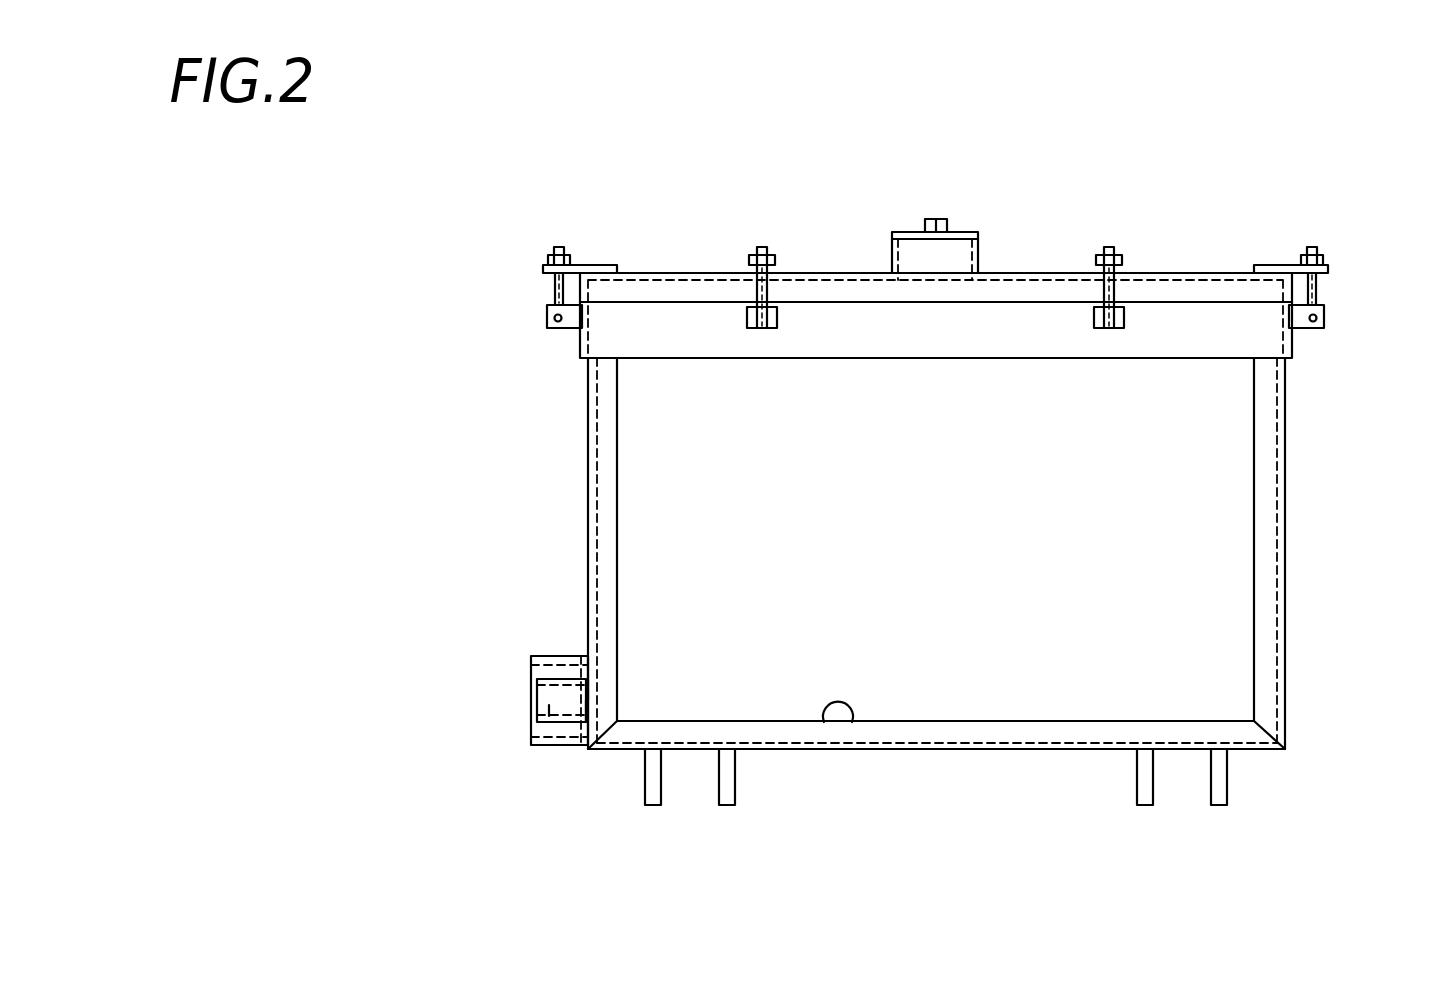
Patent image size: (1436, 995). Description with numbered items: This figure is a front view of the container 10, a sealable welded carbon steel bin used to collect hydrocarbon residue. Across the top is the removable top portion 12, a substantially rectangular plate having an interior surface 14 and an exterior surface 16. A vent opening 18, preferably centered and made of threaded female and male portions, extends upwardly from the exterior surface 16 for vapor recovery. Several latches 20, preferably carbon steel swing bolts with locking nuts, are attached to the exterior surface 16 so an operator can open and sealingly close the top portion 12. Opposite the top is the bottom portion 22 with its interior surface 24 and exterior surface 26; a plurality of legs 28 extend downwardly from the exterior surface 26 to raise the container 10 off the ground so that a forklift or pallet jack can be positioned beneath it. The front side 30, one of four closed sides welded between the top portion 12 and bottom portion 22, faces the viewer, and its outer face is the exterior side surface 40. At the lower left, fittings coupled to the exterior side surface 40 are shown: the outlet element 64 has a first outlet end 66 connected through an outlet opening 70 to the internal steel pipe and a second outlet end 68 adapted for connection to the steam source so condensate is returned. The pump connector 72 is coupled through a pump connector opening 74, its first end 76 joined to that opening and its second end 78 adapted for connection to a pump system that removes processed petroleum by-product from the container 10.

The container 10 is at (445, 318).
The removable top portion 12 is at (818, 273).
The interior surface 14 is at (1250, 302).
The exterior surface 16 is at (1032, 273).
The vent opening 18 is at (911, 258).
The latches 20 is at (754, 268).
The bottom portion 22 is at (941, 743).
The interior surface 24 is at (826, 716).
The exterior surface 26 is at (1013, 751).
The legs 28 is at (653, 805).
The front side 30 is at (1223, 438).
The exterior side surface 40 is at (1222, 557).
The outlet element 64 is at (549, 705).
The first outlet end 66 is at (587, 703).
The second outlet end 68 is at (537, 712).
The outlet opening 70 is at (589, 692).
The pump connector 72 is at (540, 656).
The pump connector opening 74 is at (586, 657).
The first end 76 is at (556, 665).
The second end 78 is at (531, 698).